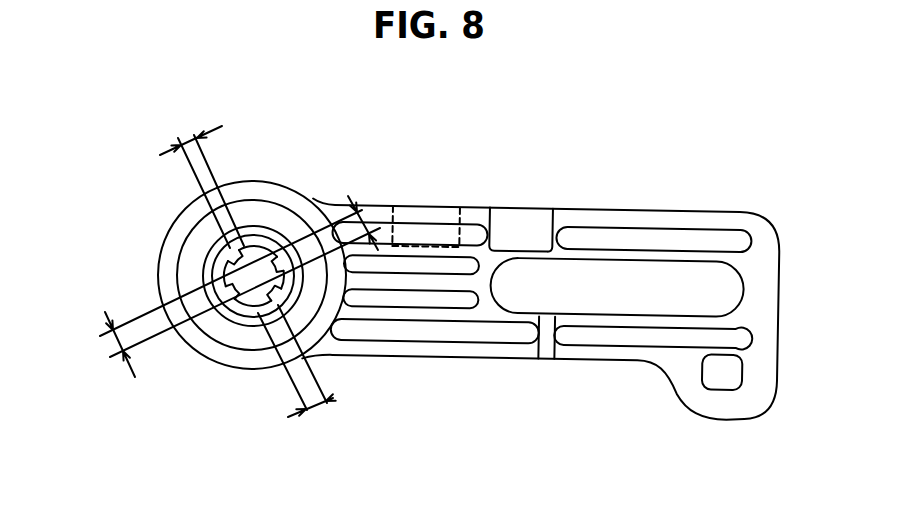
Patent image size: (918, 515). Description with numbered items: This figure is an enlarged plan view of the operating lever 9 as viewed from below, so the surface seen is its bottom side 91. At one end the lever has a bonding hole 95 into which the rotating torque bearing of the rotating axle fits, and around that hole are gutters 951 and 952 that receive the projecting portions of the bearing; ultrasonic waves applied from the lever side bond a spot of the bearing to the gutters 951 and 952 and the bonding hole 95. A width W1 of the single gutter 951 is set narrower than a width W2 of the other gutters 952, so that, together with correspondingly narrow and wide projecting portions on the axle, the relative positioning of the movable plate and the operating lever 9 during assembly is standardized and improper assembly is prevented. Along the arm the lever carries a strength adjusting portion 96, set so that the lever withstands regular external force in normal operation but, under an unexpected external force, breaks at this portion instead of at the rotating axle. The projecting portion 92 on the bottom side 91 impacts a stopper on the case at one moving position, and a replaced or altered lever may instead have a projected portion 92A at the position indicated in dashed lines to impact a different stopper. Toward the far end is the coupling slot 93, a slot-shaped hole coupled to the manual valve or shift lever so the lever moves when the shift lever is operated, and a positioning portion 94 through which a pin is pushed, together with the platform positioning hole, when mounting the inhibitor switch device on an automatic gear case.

The operating lever 9 is at (380, 173).
The bottom side 91 is at (655, 210).
The projecting portion 92 is at (535, 213).
The projected portion 92A is at (432, 213).
The coupling slot 93 is at (738, 293).
The positioning portion 94 is at (727, 388).
The bonding hole 95 is at (257, 268).
The gutter 951 is at (228, 247).
The gutters 952 is at (262, 312).
The strength adjusting portion 96 is at (447, 332).
The width of gutter 951 W1 is at (190, 142).
The width of gutters 952 W2 is at (112, 332).